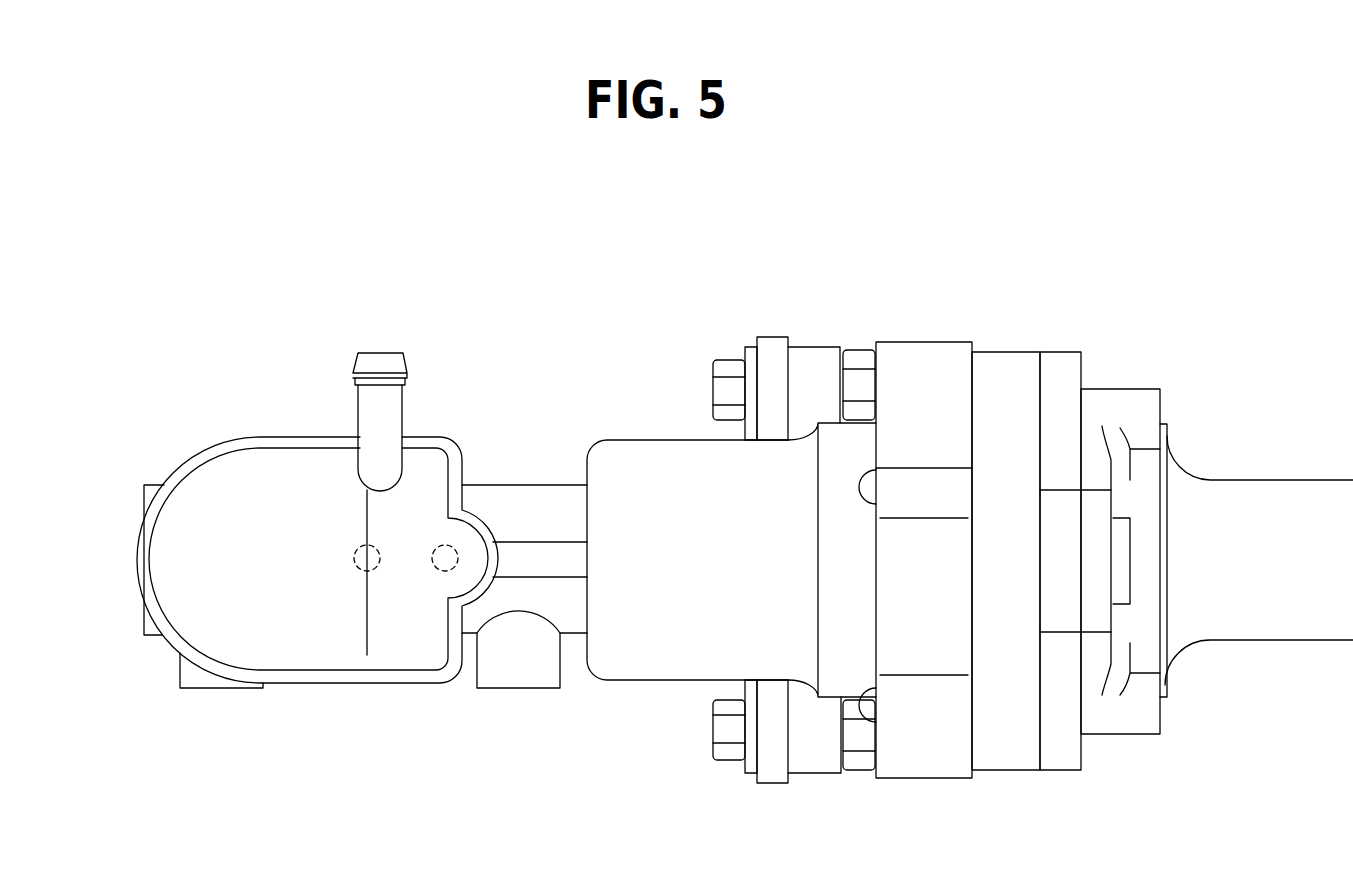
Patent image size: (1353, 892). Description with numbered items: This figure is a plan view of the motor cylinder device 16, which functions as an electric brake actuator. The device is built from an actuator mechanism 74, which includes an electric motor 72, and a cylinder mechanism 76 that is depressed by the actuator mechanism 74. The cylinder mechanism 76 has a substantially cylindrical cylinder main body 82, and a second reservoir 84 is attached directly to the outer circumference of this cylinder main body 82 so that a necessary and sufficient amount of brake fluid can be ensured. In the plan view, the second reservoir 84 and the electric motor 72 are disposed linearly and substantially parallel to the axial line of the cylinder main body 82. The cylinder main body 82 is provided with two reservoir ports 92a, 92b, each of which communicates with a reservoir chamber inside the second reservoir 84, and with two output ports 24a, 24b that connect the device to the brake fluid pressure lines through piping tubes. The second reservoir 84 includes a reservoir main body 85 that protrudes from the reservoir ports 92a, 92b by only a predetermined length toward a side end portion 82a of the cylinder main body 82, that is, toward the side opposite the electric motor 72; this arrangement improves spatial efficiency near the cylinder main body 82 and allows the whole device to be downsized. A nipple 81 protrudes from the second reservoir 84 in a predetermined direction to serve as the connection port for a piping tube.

The motor cylinder device 16 is at (1158, 267).
The output port 24a is at (515, 690).
The output port 24b is at (223, 690).
The electric motor 72 is at (637, 440).
The actuator mechanism 74 is at (1143, 387).
The cylinder mechanism 76 is at (542, 485).
The nipple 81 is at (402, 407).
The cylinder main body 82 is at (573, 633).
The side end portion 82a is at (143, 495).
The second reservoir 84 is at (326, 685).
The reservoir main body 85 is at (203, 548).
The reservoir port 92a is at (457, 548).
The reservoir port 92b is at (360, 547).